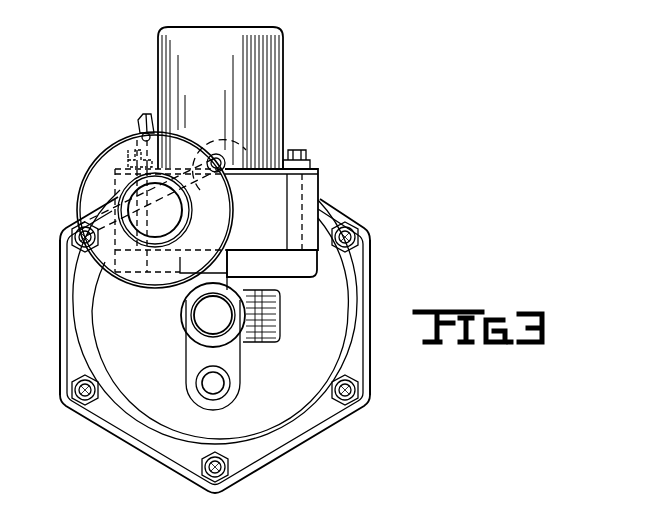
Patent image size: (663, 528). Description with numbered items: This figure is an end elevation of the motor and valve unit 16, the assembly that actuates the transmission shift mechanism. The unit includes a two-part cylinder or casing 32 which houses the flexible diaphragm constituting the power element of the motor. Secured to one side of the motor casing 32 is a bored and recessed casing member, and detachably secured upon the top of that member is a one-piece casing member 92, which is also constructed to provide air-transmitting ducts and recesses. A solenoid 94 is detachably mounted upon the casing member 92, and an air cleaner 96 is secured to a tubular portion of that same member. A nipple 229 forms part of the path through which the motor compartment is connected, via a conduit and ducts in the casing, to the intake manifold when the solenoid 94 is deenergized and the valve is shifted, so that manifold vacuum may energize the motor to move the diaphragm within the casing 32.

The motor and valve unit 16 is at (318, 192).
The two-part cylinder or casing 32 is at (317, 298).
The one-piece casing member 92 is at (322, 190).
The solenoid 94 is at (263, 97).
The air cleaner 96 is at (93, 175).
The nipple 229 is at (198, 382).